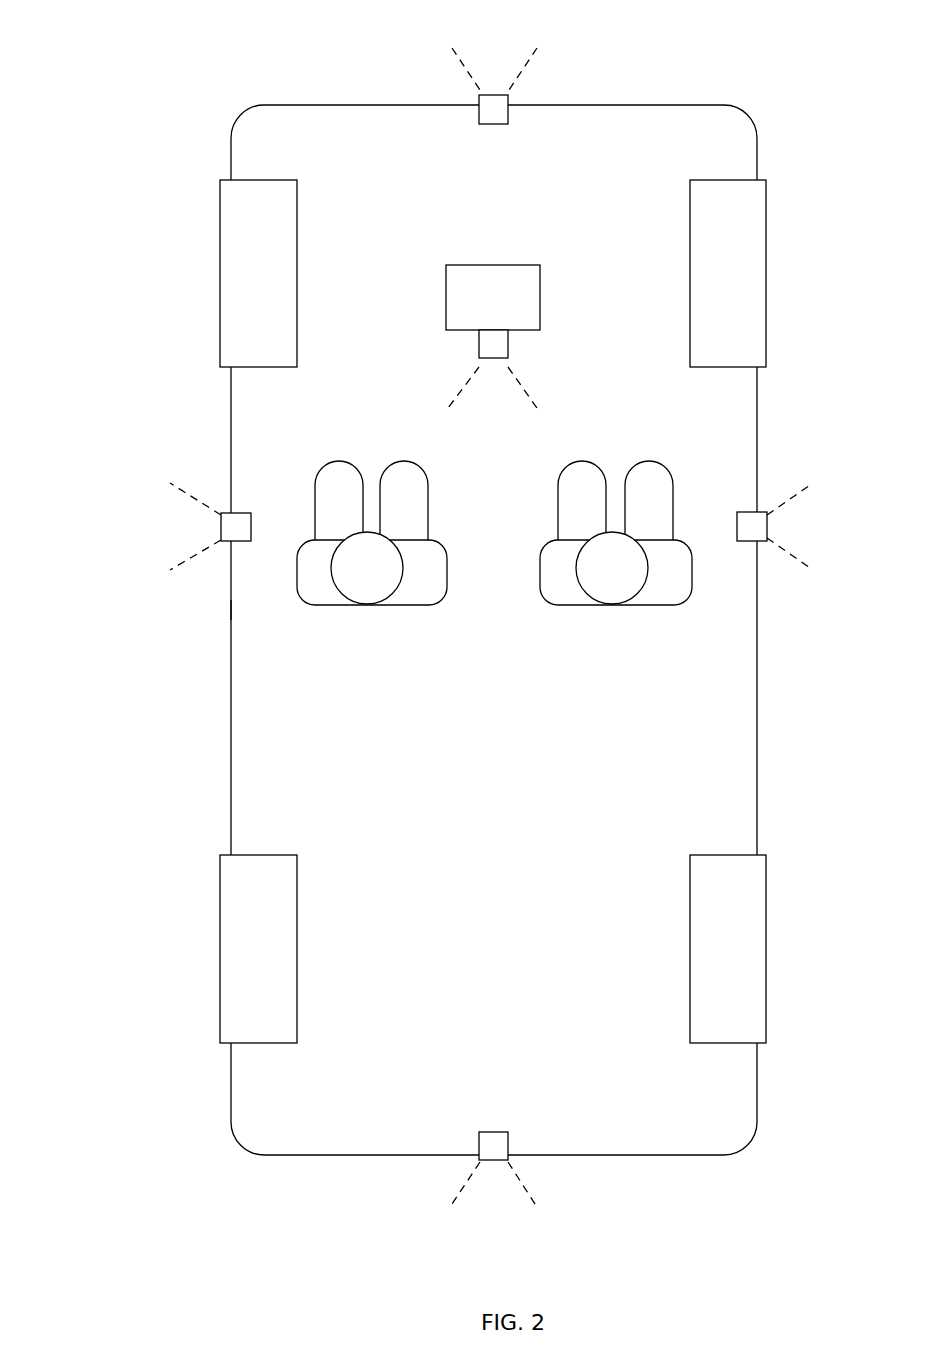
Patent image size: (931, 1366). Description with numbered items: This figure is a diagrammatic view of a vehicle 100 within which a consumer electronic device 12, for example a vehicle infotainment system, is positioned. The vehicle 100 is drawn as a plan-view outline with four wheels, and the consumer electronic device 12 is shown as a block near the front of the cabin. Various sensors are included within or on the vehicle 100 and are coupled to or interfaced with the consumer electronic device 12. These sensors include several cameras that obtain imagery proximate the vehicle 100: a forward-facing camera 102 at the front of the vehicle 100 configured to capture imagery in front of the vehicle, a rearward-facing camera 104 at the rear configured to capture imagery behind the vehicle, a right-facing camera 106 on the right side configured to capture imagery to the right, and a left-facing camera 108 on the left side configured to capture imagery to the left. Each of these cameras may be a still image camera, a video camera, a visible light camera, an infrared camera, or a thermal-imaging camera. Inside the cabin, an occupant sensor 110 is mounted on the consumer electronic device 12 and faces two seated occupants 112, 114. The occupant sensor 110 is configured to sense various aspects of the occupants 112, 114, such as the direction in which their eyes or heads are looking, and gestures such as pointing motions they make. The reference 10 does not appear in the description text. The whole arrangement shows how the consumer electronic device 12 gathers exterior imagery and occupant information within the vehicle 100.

The vehicle 100 is at (99, 20).
The vehicle body 10 is at (163, 450).
The consumer electronic device 12 is at (493, 297).
The forward-facing camera 102 is at (492, 124).
The rearward-facing camera 104 is at (493, 1132).
The right-facing camera 106 is at (750, 541).
The left-facing camera 108 is at (238, 541).
The occupant sensor 110 is at (495, 358).
The occupant 112 is at (367, 582).
The occupant 114 is at (612, 578).